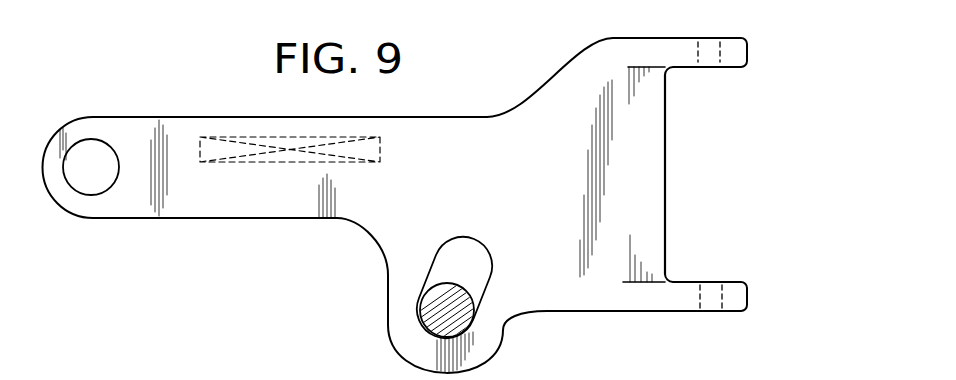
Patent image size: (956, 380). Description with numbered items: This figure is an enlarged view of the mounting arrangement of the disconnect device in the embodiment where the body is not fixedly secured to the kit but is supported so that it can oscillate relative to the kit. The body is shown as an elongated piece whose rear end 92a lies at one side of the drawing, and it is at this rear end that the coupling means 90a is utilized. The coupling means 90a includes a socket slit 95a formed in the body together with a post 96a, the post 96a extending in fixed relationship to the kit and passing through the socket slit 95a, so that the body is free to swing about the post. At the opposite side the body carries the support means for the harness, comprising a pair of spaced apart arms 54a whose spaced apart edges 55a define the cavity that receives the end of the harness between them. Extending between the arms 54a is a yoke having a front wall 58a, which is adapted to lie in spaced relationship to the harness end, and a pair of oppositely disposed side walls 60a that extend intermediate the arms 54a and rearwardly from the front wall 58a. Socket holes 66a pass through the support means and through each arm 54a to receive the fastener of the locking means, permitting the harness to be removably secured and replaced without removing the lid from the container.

The arm 54a is at (740, 47).
The edge 55a is at (732, 68).
The front wall 58a is at (665, 242).
The side wall 60a is at (638, 195).
The socket hole 66a is at (722, 298).
The coupling means 90a is at (406, 321).
The rear end 92a is at (270, 211).
The socket slit 95a is at (435, 260).
The post 96a is at (465, 313).